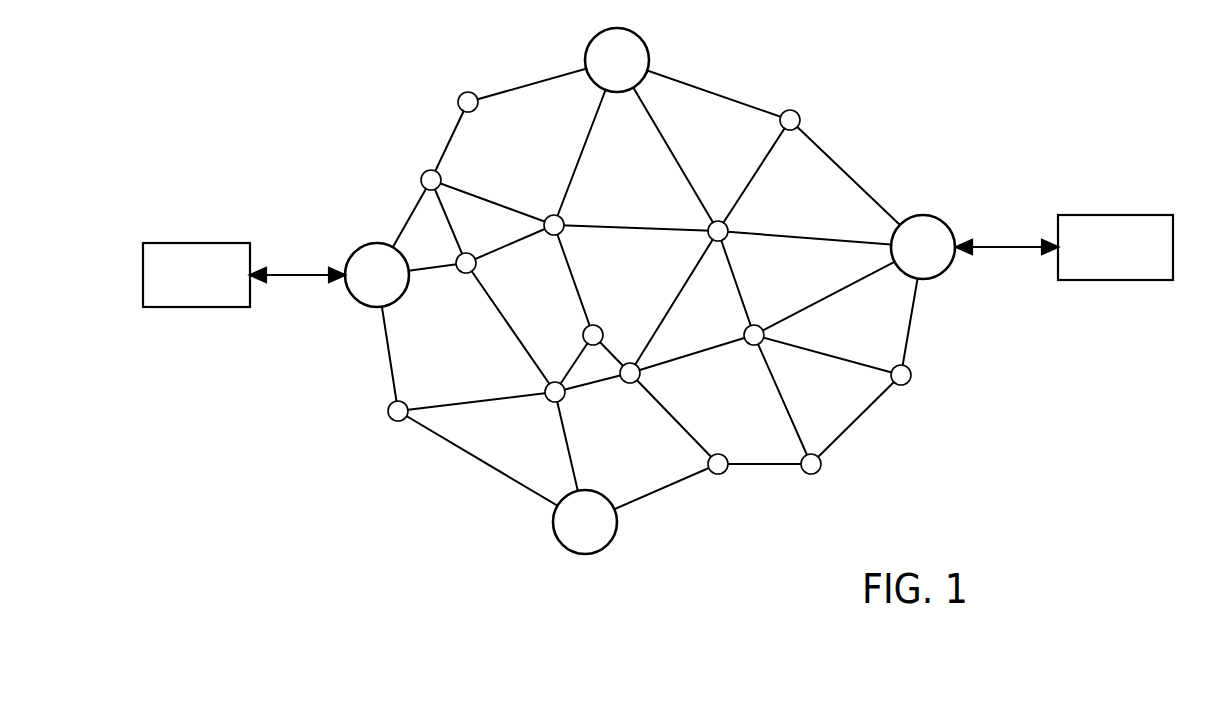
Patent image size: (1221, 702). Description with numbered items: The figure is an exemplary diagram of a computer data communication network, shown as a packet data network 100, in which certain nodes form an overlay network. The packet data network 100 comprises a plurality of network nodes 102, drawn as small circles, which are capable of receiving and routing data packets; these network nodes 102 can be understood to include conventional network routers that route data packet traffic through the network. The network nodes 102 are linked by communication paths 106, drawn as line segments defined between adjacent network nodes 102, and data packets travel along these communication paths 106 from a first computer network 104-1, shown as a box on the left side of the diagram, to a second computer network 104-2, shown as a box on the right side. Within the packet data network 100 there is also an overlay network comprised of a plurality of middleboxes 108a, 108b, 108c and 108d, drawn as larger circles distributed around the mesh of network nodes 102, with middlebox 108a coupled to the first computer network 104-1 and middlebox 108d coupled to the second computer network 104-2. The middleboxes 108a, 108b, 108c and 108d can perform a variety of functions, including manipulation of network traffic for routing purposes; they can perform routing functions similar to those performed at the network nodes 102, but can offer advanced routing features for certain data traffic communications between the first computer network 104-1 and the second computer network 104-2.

The packet data network 100 is at (348, 89).
The network node 102 is at (461, 92).
The communication path 106 is at (532, 84).
The middlebox 108a is at (358, 251).
The middlebox 108b is at (562, 500).
The middlebox 108c is at (590, 41).
The middlebox 108d is at (892, 236).
The first computer network 104-1 is at (200, 241).
The second computer network 104-2 is at (1055, 214).